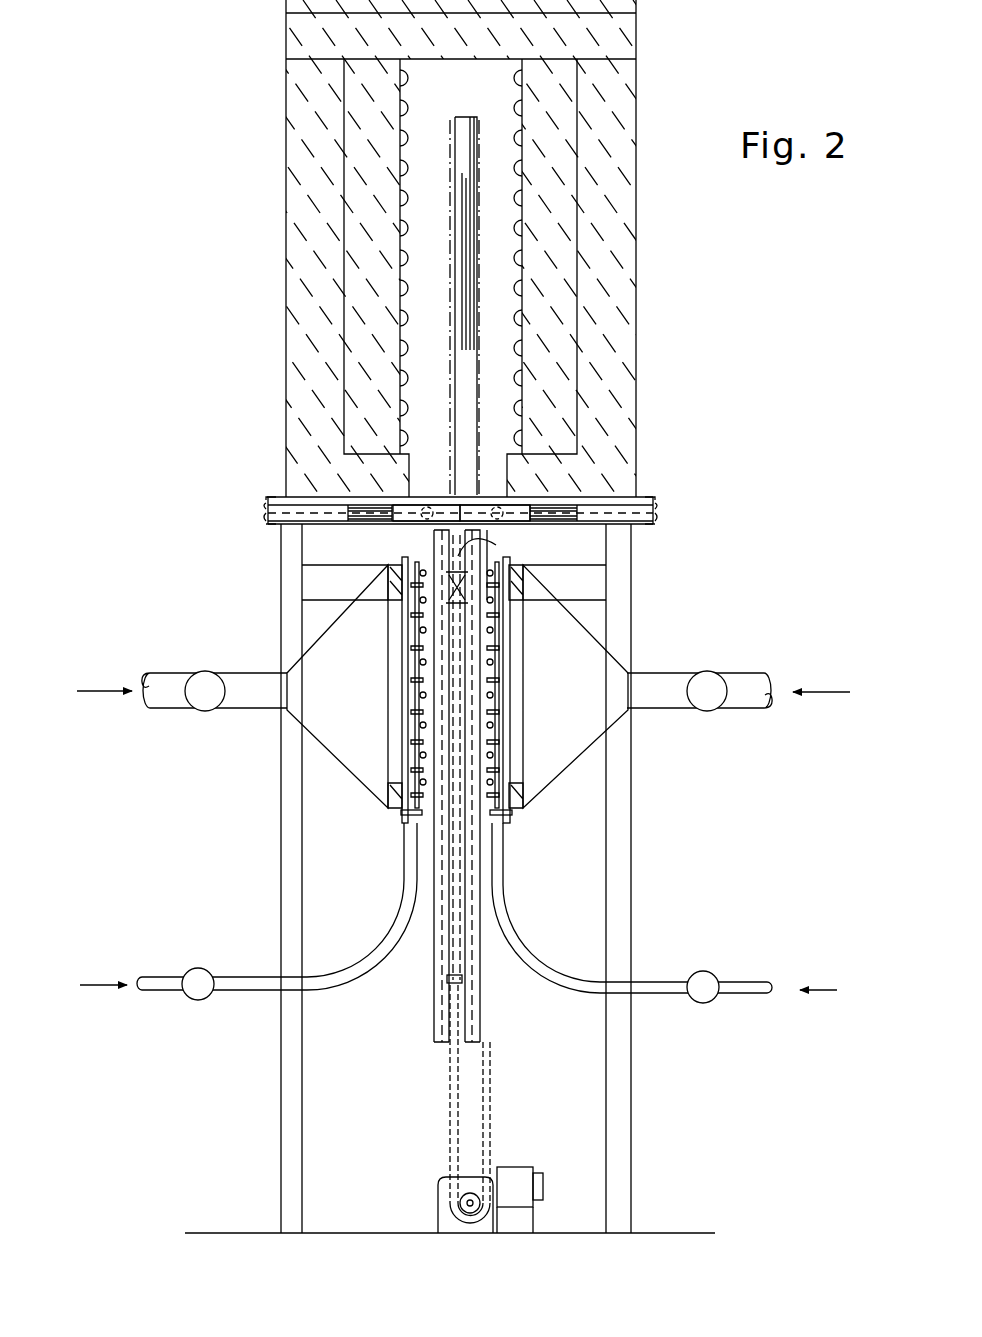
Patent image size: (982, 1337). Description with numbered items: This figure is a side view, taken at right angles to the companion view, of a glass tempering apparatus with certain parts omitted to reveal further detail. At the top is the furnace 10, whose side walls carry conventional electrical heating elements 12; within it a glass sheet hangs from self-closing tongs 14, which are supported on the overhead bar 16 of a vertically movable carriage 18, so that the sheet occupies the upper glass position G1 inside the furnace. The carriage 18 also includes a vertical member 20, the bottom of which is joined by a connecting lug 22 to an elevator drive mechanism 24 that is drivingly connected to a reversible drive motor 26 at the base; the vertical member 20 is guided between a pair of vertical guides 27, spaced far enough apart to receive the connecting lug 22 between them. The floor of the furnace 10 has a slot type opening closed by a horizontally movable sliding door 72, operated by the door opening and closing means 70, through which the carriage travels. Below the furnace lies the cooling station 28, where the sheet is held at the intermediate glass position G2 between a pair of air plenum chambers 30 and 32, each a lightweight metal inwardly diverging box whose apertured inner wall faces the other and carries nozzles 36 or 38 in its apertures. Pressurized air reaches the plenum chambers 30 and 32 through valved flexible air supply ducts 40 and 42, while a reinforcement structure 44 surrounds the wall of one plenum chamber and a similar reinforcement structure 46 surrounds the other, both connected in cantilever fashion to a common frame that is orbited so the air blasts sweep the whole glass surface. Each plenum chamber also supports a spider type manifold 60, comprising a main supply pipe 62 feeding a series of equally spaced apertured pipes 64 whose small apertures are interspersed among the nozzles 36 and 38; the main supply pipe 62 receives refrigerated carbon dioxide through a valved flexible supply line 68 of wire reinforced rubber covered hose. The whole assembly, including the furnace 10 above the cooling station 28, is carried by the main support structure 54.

The furnace 10 is at (642, 220).
The electrical heating elements 12 is at (514, 78).
The self-closing tongs 14 is at (452, 580).
The overhead bar 16 is at (458, 138).
The upper glass position G1 is at (458, 205).
The vertically movable carriage 18 is at (423, 991).
The vertical member 20 is at (462, 957).
The connecting lug 22 is at (462, 553).
The elevator drive mechanism 24 is at (452, 1102).
The reversible drive motor 26 is at (513, 1175).
The vertical guides 27 is at (465, 1043).
The cooling station 28 is at (318, 759).
The air plenum chamber 30 is at (346, 704).
The air plenum chamber 32 is at (591, 704).
The nozzle 36 is at (412, 746).
The nozzle 38 is at (500, 648).
The flexible air supply duct 40 is at (233, 673).
The flexible air supply duct 42 is at (675, 683).
The reinforcement structure 44 is at (402, 560).
The reinforcement structure 46 is at (511, 815).
The main support structure 54 is at (281, 836).
The spider type manifold 60 is at (400, 833).
The main supply pipe 62 is at (413, 721).
The apertured pipes 64 is at (417, 652).
The flexible supply line 68 is at (167, 990).
The door opening and closing means 70 is at (268, 508).
The sliding door 72 is at (418, 505).
The intermediate glass position G2 is at (468, 665).